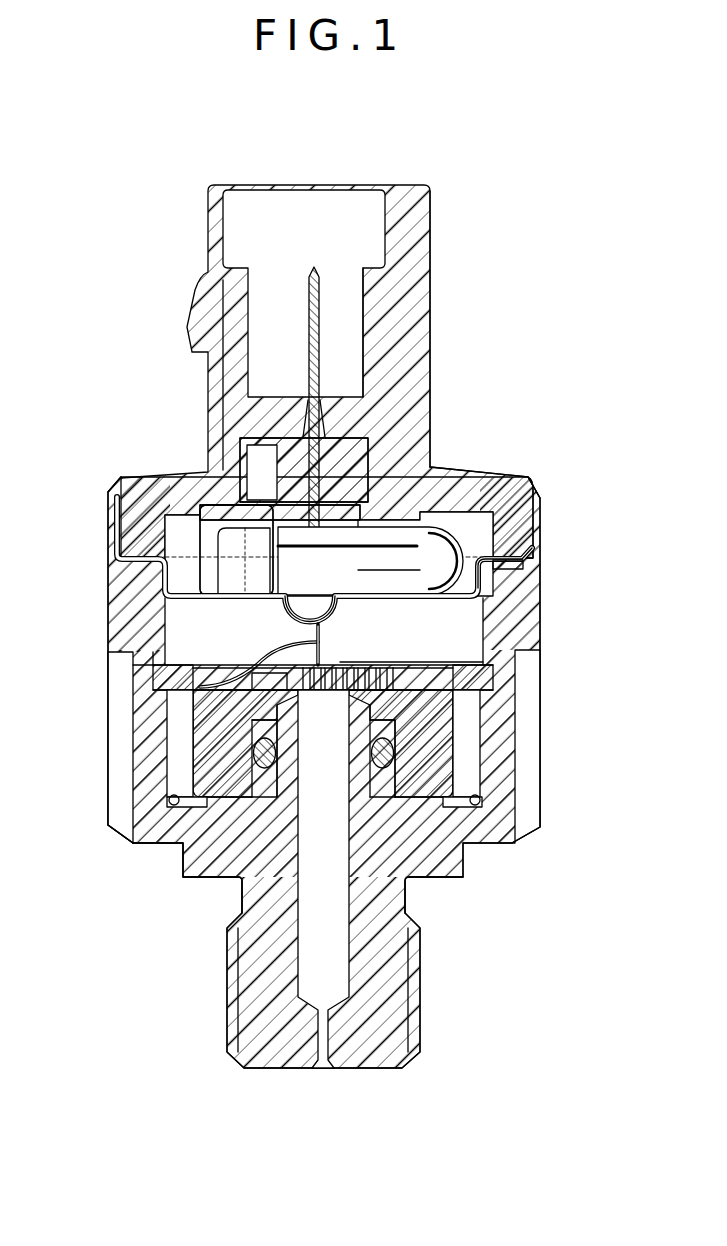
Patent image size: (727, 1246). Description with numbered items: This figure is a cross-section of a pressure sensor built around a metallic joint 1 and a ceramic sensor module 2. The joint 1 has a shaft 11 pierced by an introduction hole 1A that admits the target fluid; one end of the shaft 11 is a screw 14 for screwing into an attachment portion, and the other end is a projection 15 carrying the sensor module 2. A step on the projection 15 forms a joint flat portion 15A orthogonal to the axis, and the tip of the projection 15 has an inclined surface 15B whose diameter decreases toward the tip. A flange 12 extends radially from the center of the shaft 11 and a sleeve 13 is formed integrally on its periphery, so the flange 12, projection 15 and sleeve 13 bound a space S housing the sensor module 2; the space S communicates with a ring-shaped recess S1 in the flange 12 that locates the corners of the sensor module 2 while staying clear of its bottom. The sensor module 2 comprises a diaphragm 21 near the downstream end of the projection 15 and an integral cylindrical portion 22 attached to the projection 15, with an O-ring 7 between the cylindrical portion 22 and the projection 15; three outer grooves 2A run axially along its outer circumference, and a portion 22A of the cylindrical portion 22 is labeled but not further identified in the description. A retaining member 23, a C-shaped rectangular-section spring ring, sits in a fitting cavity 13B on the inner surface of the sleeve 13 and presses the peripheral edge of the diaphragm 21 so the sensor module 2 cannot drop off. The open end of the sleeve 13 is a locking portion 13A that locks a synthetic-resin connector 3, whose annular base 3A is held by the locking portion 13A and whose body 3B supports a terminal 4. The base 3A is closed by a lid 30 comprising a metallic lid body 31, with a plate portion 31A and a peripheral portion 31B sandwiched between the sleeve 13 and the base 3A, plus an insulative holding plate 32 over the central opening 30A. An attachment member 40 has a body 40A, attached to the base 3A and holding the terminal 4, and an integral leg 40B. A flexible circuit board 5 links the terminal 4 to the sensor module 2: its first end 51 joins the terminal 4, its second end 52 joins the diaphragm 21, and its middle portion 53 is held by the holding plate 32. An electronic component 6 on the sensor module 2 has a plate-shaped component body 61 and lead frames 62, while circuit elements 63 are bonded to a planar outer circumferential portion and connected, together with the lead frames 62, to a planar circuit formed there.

The joint 1 is at (156, 931).
The introduction hole 1A is at (300, 948).
The sensor module 2 is at (597, 685).
The outer grooves 2A is at (472, 753).
The connector 3 is at (473, 339).
The annular base 3A is at (505, 502).
The body 3B is at (397, 347).
The terminal 4 is at (308, 328).
The flexible circuit board 5 is at (420, 528).
The electronic component 6 is at (445, 606).
The O-ring 7 is at (276, 746).
The shaft 11 is at (380, 893).
The flange 12 is at (233, 827).
The sleeve 13 is at (148, 757).
The locking portion 13A is at (532, 492).
The fitting cavity 13B is at (153, 662).
The screw 14 is at (413, 1003).
The projection 15 is at (290, 770).
The joint flat portion 15A is at (285, 760).
The inclined surface 15B is at (190, 723).
The diaphragm 21 is at (385, 705).
The cylindrical portion 22 is at (433, 737).
The protrusion of base member 22A is at (473, 782).
The retaining member 23 is at (163, 660).
The lid 30 is at (219, 608).
The opening 30A is at (291, 612).
The lid body 31 is at (605, 575).
The plate portion 31A is at (492, 607).
The peripheral portion 31B is at (512, 580).
The holding plate 32 is at (348, 666).
The attachment member 40 is at (95, 395).
The body 40A is at (270, 470).
The leg 40B is at (205, 538).
The first end 51 is at (332, 551).
The second end 52 is at (210, 685).
The middle portion 53 is at (316, 640).
The component body 61 is at (365, 640).
The lead frames 62 is at (360, 660).
The circuit elements 63 is at (273, 663).
The space S is at (177, 712).
The recess S1 is at (130, 838).